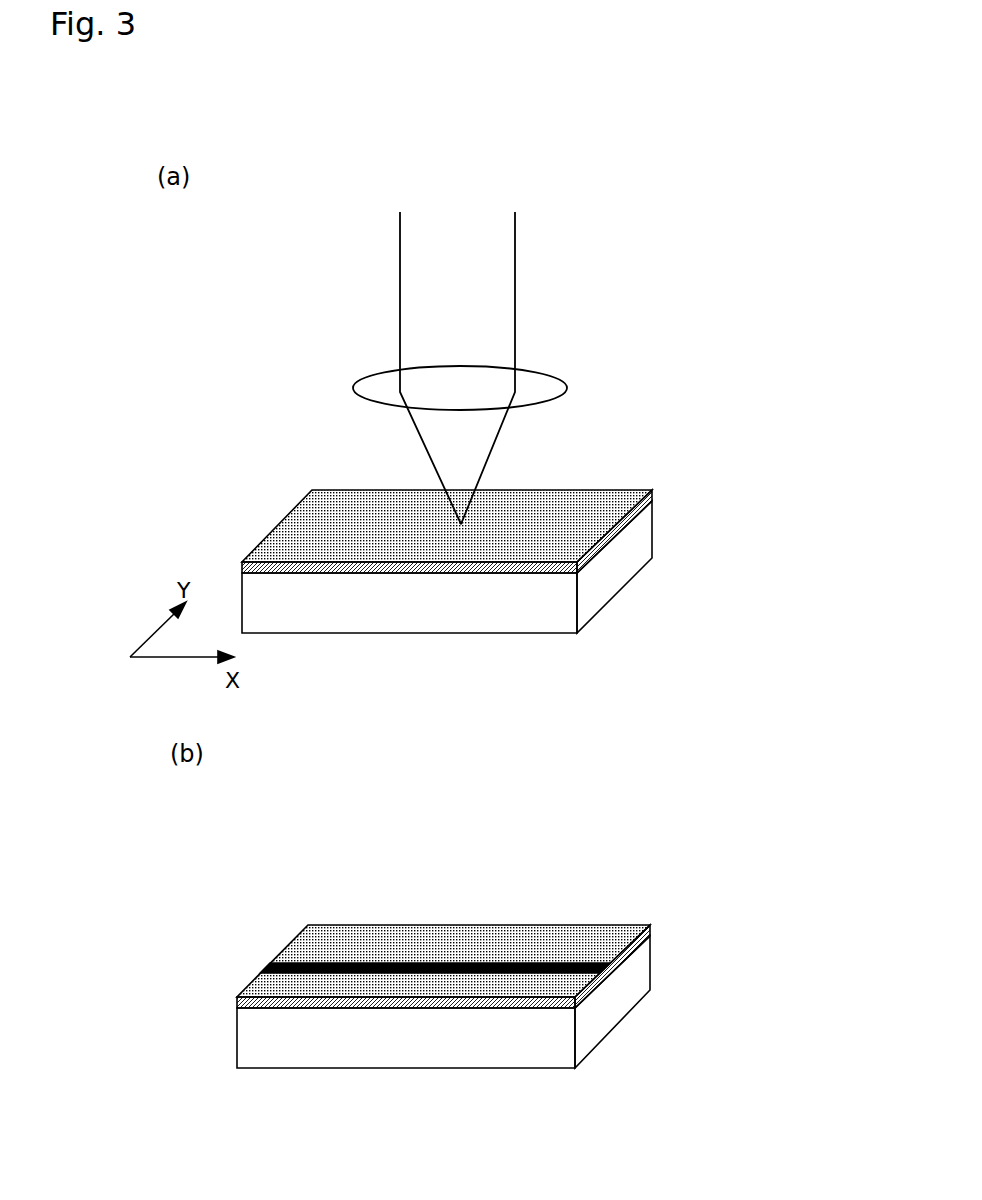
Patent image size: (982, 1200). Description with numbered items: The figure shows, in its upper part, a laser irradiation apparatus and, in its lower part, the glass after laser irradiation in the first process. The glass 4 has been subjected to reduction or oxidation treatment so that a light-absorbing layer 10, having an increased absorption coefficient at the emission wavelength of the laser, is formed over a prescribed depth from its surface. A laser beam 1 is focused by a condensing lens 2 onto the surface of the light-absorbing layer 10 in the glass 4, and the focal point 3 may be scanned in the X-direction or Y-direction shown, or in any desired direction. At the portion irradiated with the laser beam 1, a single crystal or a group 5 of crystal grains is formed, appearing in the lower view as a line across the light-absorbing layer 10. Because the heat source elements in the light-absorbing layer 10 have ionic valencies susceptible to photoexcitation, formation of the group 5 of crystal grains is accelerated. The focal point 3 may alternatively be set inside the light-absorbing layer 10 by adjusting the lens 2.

The laser beam 1 is at (395, 245).
The condensing lens 2 is at (553, 375).
The focal point 3 is at (462, 522).
The glass 4 is at (330, 623).
The group of crystal grains 5 is at (270, 963).
The light-absorbing layer 10 is at (583, 533).